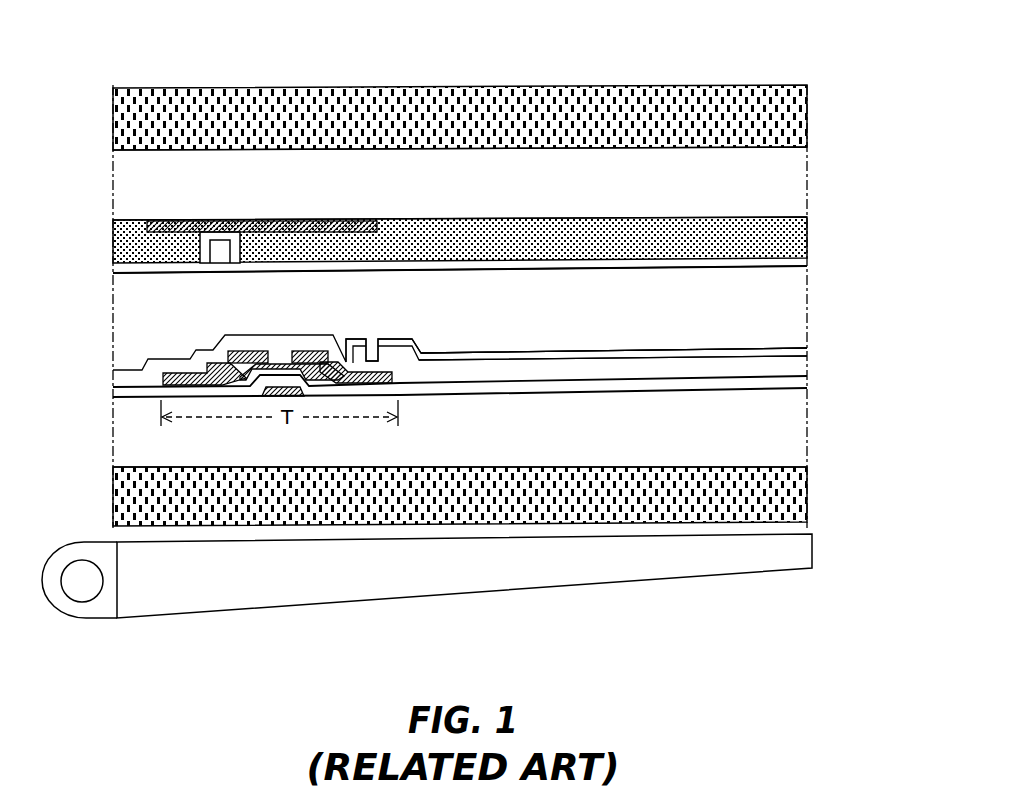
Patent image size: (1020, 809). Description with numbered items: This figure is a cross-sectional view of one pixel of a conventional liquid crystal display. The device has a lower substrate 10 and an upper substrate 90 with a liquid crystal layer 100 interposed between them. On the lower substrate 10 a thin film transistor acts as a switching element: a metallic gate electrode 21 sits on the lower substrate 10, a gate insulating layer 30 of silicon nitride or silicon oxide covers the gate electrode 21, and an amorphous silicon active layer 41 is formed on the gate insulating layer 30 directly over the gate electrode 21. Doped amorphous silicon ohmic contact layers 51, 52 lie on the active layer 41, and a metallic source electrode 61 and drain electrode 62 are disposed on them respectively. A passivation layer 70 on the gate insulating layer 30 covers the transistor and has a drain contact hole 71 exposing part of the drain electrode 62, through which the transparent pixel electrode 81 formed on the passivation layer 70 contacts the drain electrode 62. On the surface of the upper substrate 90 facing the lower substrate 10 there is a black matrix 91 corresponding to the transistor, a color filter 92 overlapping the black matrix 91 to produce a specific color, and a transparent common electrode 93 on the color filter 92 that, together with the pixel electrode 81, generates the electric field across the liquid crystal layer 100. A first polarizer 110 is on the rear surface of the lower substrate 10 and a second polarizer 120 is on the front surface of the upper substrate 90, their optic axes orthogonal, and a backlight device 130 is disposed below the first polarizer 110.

The lower substrate 10 is at (473, 437).
The gate electrode 21 is at (272, 400).
The gate insulating layer 30 is at (608, 382).
The active layer 41 is at (300, 372).
The ohmic contact layer 51 is at (220, 362).
The ohmic contact layer 52 is at (327, 356).
The source electrode 61 is at (247, 351).
The drain electrode 62 is at (300, 351).
The passivation layer 70 is at (165, 366).
The drain contact hole 71 is at (576, 317).
The pixel electrode 81 is at (518, 356).
The upper substrate 90 is at (362, 185).
The black matrix 91 is at (225, 226).
The color filter 92 is at (470, 233).
The common electrode 93 is at (658, 262).
The liquid crystal layer 100 is at (757, 301).
The first polarizer 110 is at (728, 505).
The second polarizer 120 is at (565, 110).
The backlight device 130 is at (820, 532).